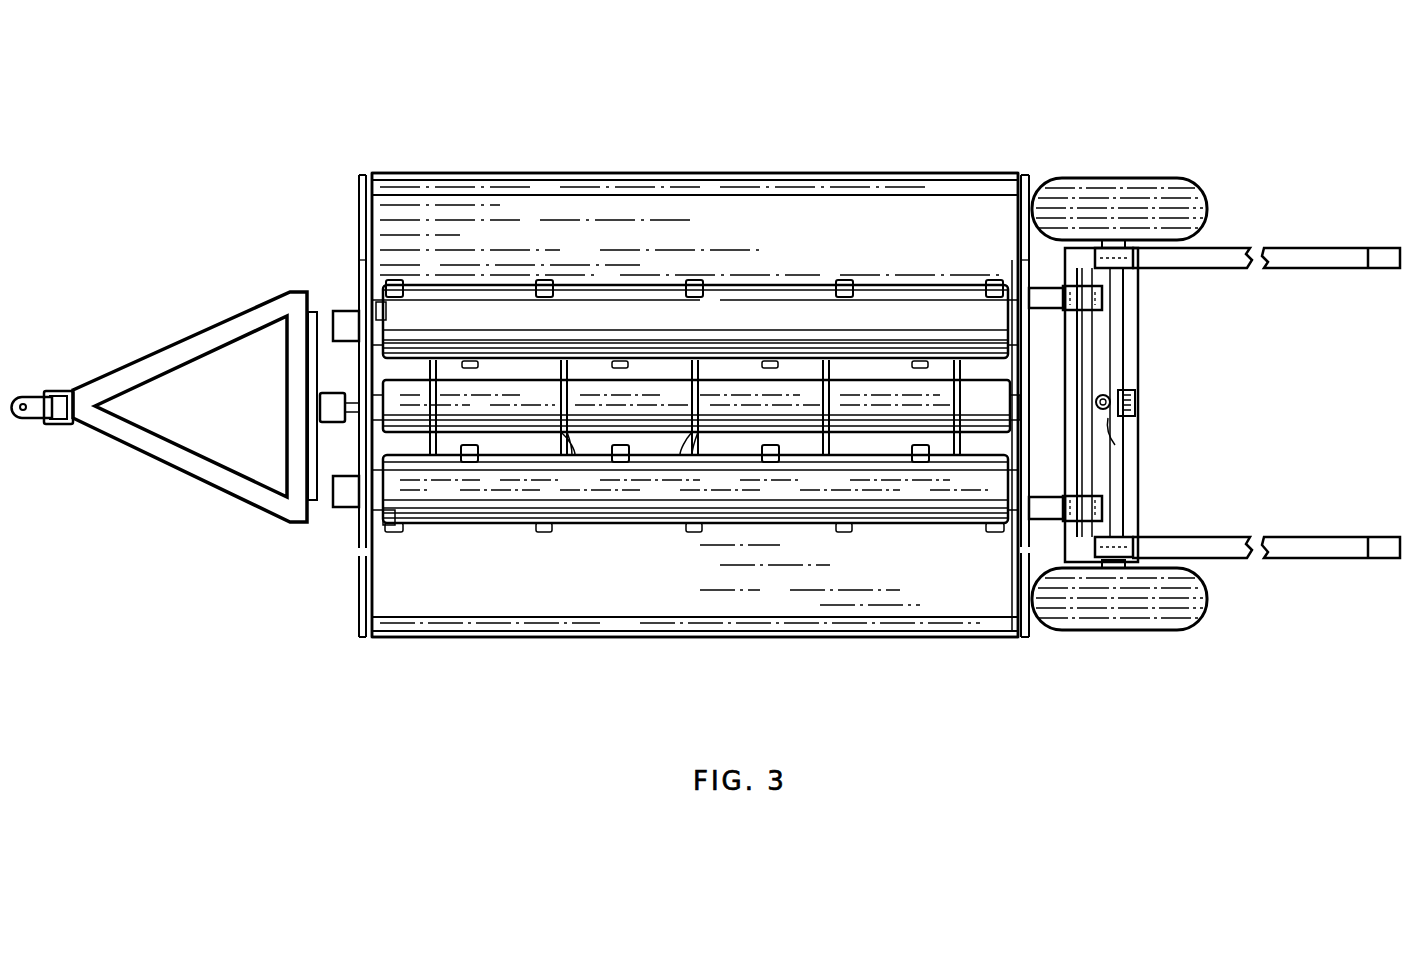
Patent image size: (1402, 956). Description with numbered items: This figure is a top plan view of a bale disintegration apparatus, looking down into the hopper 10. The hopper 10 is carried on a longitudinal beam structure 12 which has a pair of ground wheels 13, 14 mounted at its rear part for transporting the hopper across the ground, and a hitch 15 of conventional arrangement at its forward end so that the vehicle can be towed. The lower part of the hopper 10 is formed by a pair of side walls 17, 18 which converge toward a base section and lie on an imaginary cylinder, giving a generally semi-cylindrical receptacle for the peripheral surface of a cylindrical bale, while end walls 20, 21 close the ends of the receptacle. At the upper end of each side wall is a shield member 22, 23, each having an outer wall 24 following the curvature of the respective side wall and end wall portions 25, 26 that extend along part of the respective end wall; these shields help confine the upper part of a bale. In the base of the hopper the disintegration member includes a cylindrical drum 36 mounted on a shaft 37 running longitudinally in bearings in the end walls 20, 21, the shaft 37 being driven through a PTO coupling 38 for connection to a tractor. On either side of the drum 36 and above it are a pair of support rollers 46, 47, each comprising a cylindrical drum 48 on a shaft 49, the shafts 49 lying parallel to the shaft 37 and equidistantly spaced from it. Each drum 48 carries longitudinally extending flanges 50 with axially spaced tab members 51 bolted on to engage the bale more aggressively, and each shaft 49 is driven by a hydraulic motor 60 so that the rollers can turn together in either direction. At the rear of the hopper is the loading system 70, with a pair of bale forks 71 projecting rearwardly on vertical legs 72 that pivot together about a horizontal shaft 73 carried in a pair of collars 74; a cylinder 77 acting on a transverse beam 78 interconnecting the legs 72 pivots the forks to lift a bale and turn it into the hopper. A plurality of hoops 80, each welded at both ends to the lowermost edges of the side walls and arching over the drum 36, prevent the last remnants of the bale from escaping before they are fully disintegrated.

The hopper 10 is at (933, 162).
The longitudinal beam structure 12 is at (203, 323).
The ground wheel 13 is at (1125, 180).
The ground wheel 14 is at (1137, 607).
The hitch 15 is at (32, 388).
The side wall 17 is at (682, 220).
The side wall 18 is at (737, 597).
The end wall 20 is at (358, 555).
The end wall 21 is at (1015, 260).
The shield member 22 is at (793, 172).
The shield member 23 is at (800, 640).
The outer wall 24 is at (637, 175).
The end wall portion 25 is at (360, 593).
The end wall portion 26 is at (1015, 580).
The cylindrical drum 36 is at (890, 407).
The shaft 37 is at (353, 403).
The PTO coupling 38 is at (330, 403).
The support roller 46 is at (743, 307).
The support roller 47 is at (650, 518).
The cylindrical drum 48 is at (810, 497).
The shaft 49 is at (385, 307).
The flange 50 is at (487, 520).
The tab member 51 is at (550, 527).
The hydraulic motor 60 is at (347, 318).
The loading system 70 is at (1280, 225).
The bale fork 71 is at (1330, 257).
The vertical leg 72 is at (1135, 262).
The horizontal shaft 73 is at (1082, 353).
The collar 74 is at (1103, 302).
The cylinder 77 is at (1110, 445).
The transverse beam 78 is at (1125, 478).
The hoop 80 is at (687, 438).